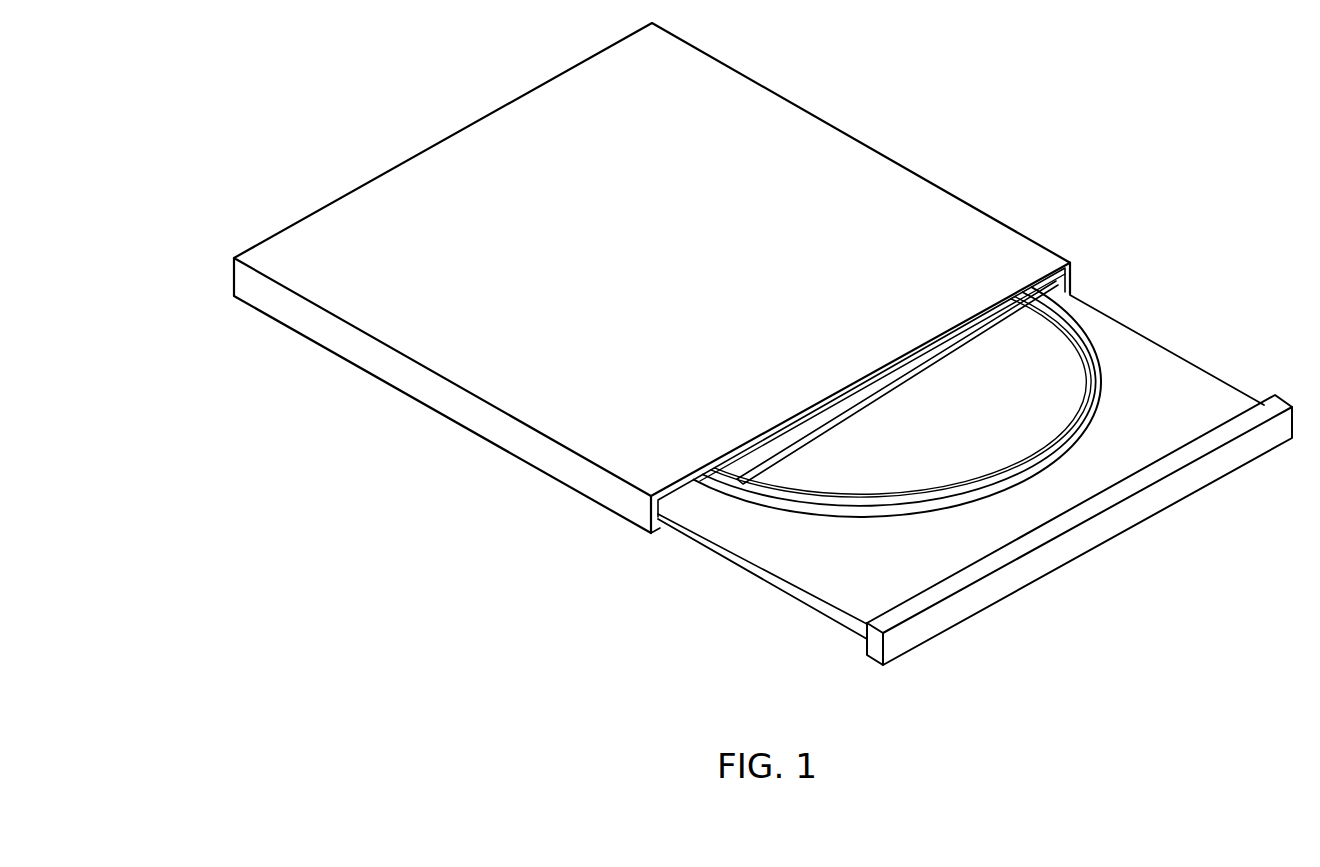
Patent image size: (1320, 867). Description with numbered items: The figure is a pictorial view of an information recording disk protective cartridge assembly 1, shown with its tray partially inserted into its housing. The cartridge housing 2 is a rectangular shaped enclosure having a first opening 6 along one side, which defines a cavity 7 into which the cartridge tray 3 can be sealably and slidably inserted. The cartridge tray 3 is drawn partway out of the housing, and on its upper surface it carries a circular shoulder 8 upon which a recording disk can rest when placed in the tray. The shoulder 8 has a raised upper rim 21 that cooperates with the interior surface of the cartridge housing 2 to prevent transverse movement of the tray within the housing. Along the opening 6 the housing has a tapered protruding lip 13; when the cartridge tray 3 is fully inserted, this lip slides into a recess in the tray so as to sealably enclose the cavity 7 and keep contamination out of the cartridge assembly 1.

The information recording disk protective cartridge assembly 1 is at (764, 647).
The cartridge housing 2 is at (665, 273).
The cartridge tray 3 is at (1180, 382).
The first opening 6 is at (928, 361).
The cavity 7 is at (854, 414).
The circular shoulder 8 is at (1057, 340).
The tapered protruding lip 13 is at (1021, 285).
The raised upper rim 21 is at (1100, 370).